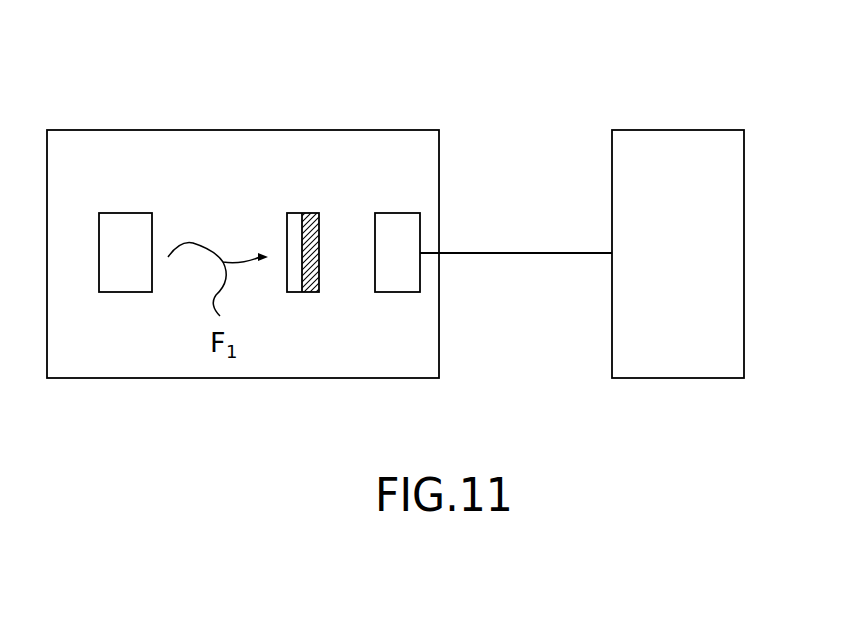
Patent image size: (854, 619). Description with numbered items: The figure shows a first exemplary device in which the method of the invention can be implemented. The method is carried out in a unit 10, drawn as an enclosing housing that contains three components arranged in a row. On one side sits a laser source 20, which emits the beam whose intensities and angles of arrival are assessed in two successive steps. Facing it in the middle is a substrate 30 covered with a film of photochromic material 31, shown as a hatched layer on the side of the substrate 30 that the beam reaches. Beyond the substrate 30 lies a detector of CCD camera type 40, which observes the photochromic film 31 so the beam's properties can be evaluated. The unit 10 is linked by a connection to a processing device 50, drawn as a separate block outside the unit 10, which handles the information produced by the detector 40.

The unit 10 is at (205, 153).
The laser source 20 is at (117, 228).
The substrate 30 is at (303, 258).
The film of photochromic material 31 is at (295, 222).
The detector of CCD camera type 40 is at (399, 223).
The processing device 50 is at (673, 152).